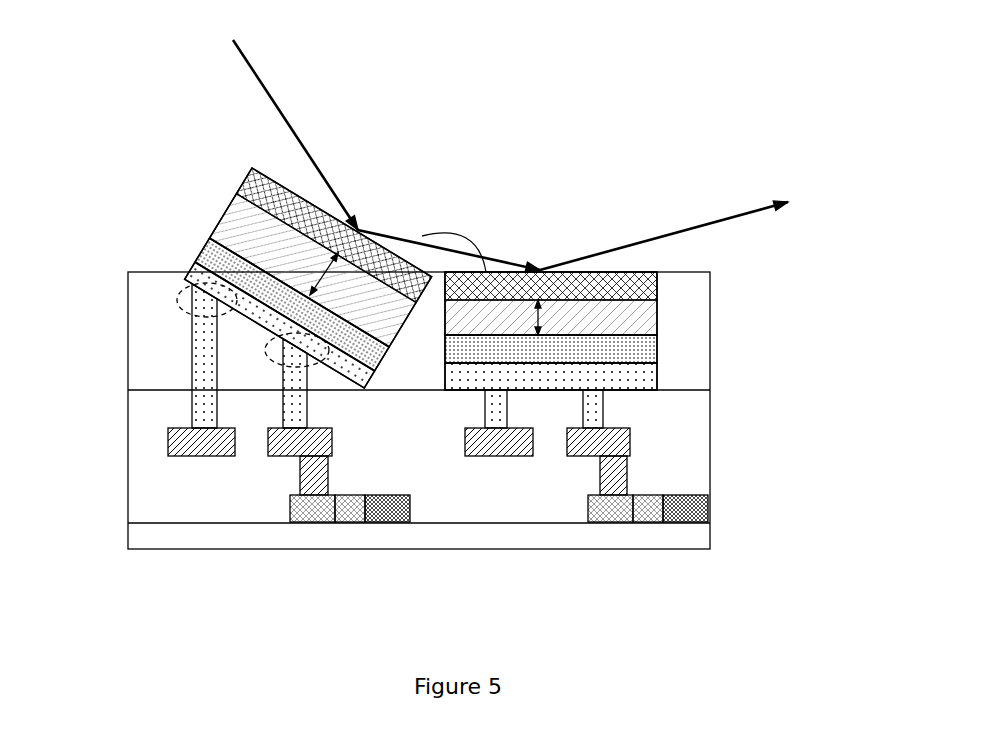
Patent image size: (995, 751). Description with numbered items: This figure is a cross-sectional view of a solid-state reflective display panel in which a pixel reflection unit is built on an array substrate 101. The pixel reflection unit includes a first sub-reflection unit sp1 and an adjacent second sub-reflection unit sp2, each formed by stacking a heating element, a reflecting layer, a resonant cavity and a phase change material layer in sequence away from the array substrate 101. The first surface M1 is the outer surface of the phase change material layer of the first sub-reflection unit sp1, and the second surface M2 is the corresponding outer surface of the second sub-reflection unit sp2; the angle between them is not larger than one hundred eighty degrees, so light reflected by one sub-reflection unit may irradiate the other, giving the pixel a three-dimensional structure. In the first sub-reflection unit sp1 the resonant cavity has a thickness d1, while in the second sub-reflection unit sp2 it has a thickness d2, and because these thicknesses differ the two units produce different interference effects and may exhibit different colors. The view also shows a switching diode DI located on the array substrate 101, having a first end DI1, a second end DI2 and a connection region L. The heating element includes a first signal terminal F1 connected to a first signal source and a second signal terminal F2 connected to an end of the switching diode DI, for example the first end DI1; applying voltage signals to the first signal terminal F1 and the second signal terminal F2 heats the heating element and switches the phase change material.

The array substrate 101 is at (102, 392).
The first sub-reflection unit sp1 is at (261, 234).
The second sub-reflection unit sp2 is at (487, 261).
The first surface M1 is at (288, 188).
The second surface M2 is at (600, 272).
The thickness of the resonant cavity in the first sub-reflection unit d1 is at (335, 275).
The thickness of the resonant cavity in the second sub-reflection unit d2 is at (555, 317).
The first signal terminal F1 is at (187, 315).
The second signal terminal F2 is at (265, 348).
The first end DI1 is at (303, 513).
The connection region L is at (345, 513).
The second end DI2 is at (387, 513).
The switching diode DI is at (496, 570).